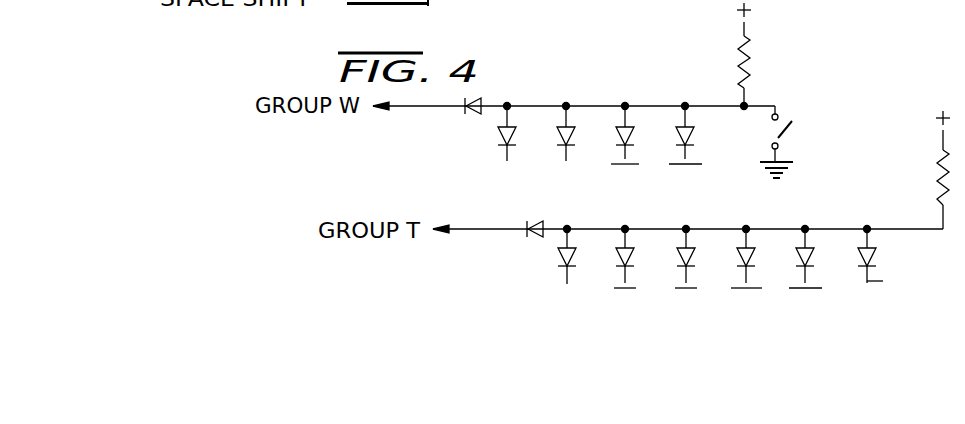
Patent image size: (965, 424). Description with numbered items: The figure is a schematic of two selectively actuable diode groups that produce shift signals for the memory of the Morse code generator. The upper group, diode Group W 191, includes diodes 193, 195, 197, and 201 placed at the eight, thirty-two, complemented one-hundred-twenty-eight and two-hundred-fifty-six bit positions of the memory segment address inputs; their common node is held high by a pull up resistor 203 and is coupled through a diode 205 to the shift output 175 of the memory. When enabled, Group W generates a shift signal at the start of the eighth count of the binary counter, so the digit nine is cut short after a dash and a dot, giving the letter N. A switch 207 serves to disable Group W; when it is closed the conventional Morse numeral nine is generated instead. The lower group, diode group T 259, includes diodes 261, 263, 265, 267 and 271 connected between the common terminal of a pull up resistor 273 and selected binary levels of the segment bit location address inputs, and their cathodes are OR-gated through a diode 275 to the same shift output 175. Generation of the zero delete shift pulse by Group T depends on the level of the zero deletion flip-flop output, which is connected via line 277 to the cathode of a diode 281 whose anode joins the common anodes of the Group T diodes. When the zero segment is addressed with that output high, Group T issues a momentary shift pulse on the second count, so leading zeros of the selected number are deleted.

The shift output 175 is at (374, 108).
The diode Group W 191 is at (571, 81).
The diode 193 is at (500, 137).
The diode 195 is at (560, 136).
The diode 197 is at (619, 136).
The diode 201 is at (677, 136).
The pull up resistor 203 is at (749, 46).
The diode 205 is at (472, 100).
The switch 207 is at (779, 116).
The diode group T 259 is at (806, 208).
The diode 261 is at (559, 254).
The diode 263 is at (620, 254).
The diode 265 is at (678, 253).
The diode 267 is at (739, 250).
The diode 271 is at (798, 251).
The pull up resistor 273 is at (940, 162).
The diode 275 is at (527, 222).
The line 277 is at (892, 284).
The diode 281 is at (874, 258).